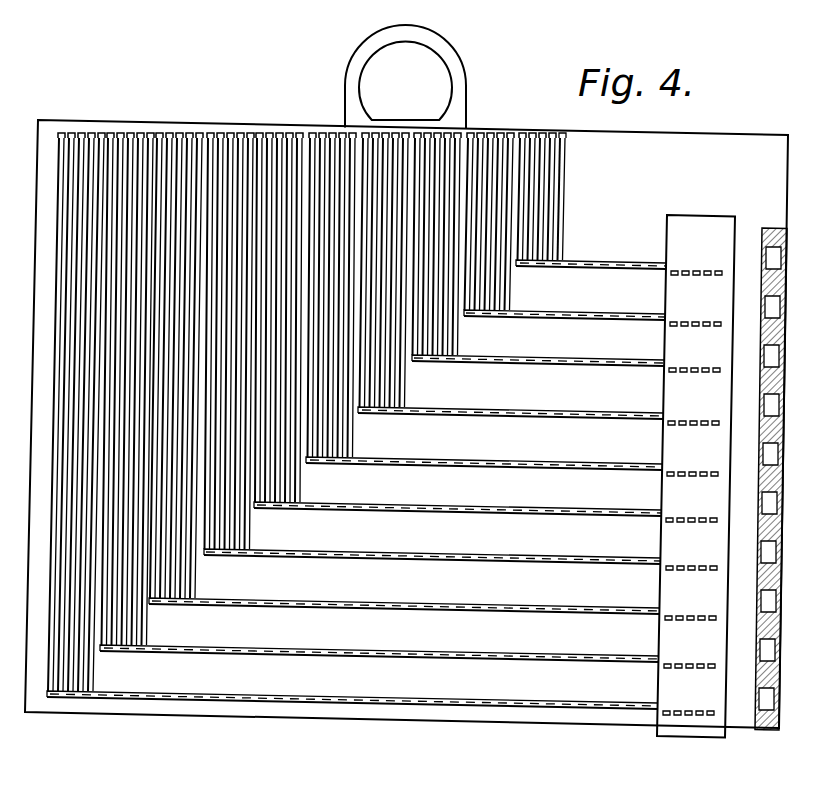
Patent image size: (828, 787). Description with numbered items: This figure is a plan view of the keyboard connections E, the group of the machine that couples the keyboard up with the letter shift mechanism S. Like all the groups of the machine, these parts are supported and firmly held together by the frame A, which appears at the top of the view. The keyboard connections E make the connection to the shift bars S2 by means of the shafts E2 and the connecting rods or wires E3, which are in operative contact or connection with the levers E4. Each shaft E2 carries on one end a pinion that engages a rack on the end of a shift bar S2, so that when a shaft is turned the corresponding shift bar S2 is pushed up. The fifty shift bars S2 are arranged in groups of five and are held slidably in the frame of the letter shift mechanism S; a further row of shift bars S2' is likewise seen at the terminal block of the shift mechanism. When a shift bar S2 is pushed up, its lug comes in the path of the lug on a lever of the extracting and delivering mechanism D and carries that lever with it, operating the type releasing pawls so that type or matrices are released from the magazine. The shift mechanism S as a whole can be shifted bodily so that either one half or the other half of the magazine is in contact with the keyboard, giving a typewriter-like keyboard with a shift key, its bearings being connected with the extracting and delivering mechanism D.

The keyboard connections E is at (207, 123).
The frame A is at (455, 70).
The connecting rods or wires E3 is at (64, 511).
The levers E4 is at (566, 145).
The shafts E2 is at (460, 562).
The letter shift mechanism S is at (696, 476).
The shift bars S2 is at (691, 532).
The terminal contact row S2' is at (690, 630).
The extracting and delivering mechanism D is at (771, 479).